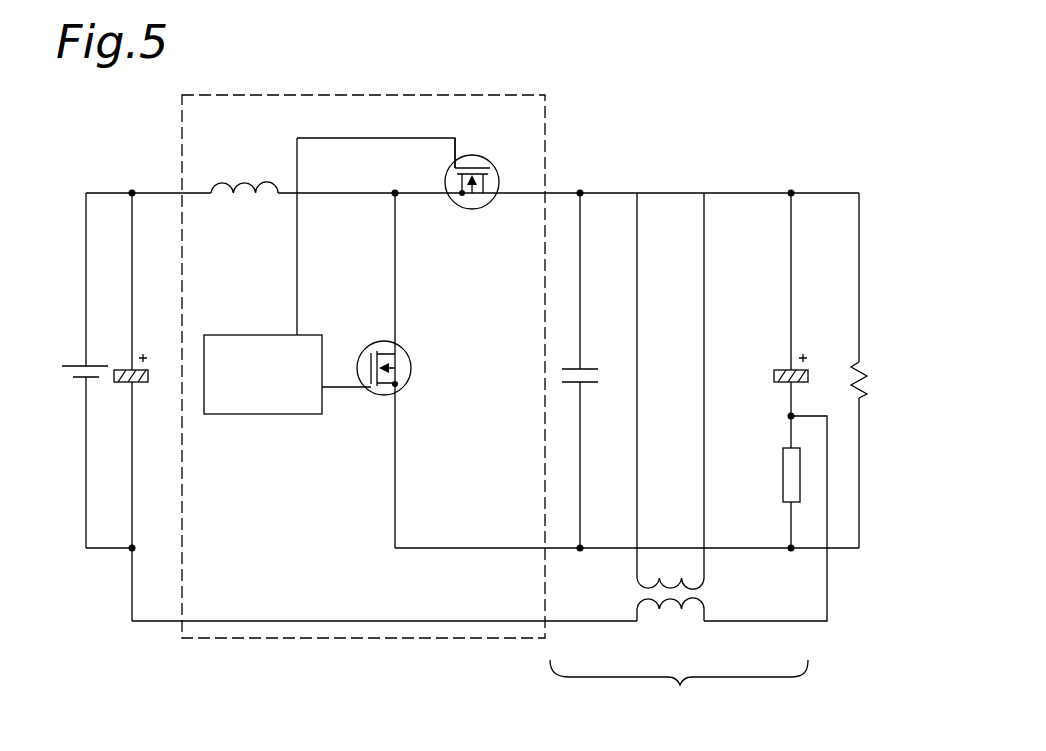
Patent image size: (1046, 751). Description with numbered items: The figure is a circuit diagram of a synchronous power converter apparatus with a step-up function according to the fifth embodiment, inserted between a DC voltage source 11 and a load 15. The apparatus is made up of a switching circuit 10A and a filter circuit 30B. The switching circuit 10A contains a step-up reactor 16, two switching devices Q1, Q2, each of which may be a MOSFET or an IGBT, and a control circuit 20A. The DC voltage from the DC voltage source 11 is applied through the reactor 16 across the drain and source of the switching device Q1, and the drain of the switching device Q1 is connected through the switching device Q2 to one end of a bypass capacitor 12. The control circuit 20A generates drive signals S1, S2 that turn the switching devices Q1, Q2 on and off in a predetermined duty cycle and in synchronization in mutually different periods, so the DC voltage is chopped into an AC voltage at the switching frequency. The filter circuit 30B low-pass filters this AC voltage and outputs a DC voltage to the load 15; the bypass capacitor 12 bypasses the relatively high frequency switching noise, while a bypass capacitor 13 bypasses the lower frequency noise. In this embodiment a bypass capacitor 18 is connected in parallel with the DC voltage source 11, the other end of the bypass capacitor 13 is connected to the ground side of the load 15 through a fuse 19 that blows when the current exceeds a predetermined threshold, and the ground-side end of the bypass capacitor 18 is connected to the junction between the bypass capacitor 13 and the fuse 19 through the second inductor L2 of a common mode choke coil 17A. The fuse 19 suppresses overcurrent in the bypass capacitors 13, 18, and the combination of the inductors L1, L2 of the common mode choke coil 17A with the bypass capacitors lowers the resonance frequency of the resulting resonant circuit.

The switching circuit 10A is at (297, 95).
The DC voltage source 11 is at (68, 365).
The bypass capacitor 12 is at (583, 369).
The bypass capacitor 13 is at (808, 354).
The load 15 is at (863, 362).
The step-up reactor 16 is at (238, 181).
The common mode choke coil 17A is at (746, 426).
The bypass capacitor 18 is at (143, 384).
The fuse 19 is at (782, 488).
The control circuit 20A is at (252, 335).
The filter circuit 30B is at (679, 692).
The switching device Q1 is at (399, 392).
The switching device Q2 is at (466, 209).
The drive signal S1 is at (338, 386).
The drive signal S2 is at (430, 155).
The first inductor L1 is at (671, 582).
The second inductor L2 is at (690, 606).